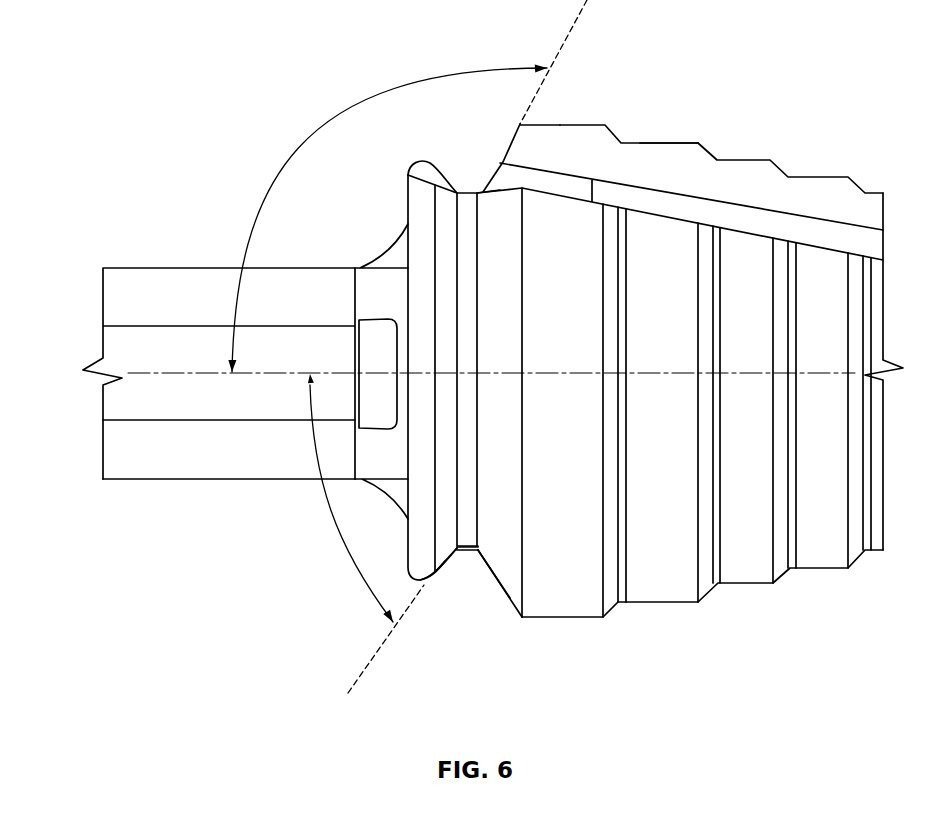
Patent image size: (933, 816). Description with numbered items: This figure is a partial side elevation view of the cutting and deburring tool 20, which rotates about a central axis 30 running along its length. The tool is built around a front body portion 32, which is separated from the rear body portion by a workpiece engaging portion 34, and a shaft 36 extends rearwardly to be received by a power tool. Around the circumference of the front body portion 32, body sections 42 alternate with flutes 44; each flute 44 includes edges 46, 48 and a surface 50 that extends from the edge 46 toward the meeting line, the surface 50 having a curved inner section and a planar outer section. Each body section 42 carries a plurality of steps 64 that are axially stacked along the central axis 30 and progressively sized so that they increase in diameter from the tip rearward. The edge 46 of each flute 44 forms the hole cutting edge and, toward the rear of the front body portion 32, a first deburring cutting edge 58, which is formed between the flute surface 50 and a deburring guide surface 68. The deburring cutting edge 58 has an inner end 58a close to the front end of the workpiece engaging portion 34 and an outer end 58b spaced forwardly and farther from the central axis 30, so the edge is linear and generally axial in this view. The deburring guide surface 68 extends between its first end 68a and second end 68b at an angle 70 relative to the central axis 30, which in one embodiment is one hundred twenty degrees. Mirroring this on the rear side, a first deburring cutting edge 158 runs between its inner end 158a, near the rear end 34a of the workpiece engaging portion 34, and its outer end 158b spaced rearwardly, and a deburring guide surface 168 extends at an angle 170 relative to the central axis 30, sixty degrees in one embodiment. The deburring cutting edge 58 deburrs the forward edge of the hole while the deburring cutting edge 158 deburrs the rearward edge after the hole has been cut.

The cutting and deburring tool 20 is at (235, 137).
The central axis 30 is at (141, 373).
The shaft 36 is at (145, 463).
The workpiece engaging portion 34 is at (466, 539).
The rear end of the workpiece engaging portion 34a is at (457, 195).
The first deburring cutting edge 158 is at (433, 168).
The inner end of the first deburring cutting edge 158a is at (455, 552).
The outer end of the first deburring cutting edge 158b is at (437, 573).
The deburring guide surface 168 is at (447, 541).
The deburring guide surface 68 is at (515, 555).
The first end of the deburring guide surface 68a is at (478, 552).
The second end of the deburring guide surface 68b is at (486, 570).
The deburring cutting edge 58 is at (514, 145).
The inner end of the deburring cutting edge 58a is at (477, 195).
The outer end of the deburring cutting edge 58b is at (520, 125).
The front body portion 32 is at (676, 610).
The steps 64 is at (747, 560).
The body section 42 is at (828, 553).
The flute 44 is at (648, 149).
The edge 46 is at (681, 143).
The surface 50 is at (748, 177).
The edge 48 is at (808, 243).
The angle 70 is at (408, 82).
The angle 170 is at (357, 575).